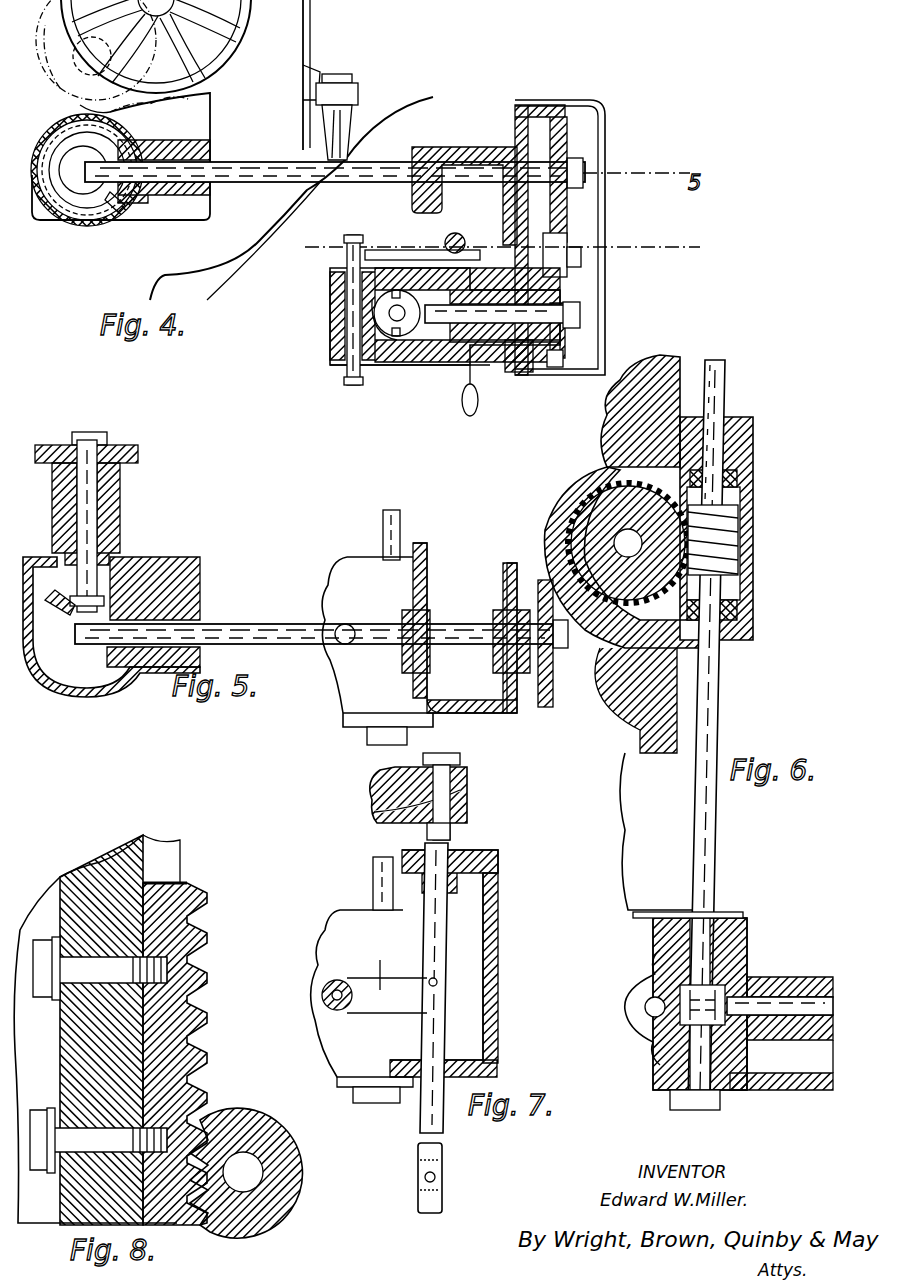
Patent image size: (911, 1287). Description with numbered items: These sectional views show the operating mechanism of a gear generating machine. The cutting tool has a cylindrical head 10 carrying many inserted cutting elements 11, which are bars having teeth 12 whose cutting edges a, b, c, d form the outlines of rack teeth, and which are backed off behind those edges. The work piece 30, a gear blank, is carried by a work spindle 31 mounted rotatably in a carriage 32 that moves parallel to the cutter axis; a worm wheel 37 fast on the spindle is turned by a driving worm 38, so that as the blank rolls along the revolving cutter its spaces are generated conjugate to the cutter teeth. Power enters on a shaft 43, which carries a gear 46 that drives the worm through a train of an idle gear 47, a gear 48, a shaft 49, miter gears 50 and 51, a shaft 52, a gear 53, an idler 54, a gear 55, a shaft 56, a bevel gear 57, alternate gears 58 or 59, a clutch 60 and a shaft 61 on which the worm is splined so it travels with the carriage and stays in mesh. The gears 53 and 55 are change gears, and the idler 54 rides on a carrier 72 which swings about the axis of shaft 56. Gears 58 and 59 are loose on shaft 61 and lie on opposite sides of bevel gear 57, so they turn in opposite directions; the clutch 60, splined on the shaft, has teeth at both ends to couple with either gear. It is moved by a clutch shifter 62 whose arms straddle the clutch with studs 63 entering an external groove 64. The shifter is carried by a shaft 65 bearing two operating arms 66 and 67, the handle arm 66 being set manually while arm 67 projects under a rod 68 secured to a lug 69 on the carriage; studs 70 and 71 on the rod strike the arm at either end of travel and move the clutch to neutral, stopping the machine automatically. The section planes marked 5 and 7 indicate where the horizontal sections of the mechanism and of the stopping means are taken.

In FIG. 4, the section line 5— 5 is at (455, 643).
In FIG. 4, the section line 7— 7 is at (496, 249).
In FIG. 8, the cylindrical head 10 is at (60, 1023).
In FIG. 4, the cutting elements 11 is at (322, 72).
In FIG. 8, the cutting elements 11 is at (160, 1033).
In FIG. 8, the teeth 12 is at (205, 950).
In FIG. 4, the work piece 30 is at (358, 97).
In FIG. 8, the work piece 30 is at (258, 1210).
In FIG. 4, the work spindle 31 is at (348, 140).
In FIG. 6, the carriage 32 is at (668, 437).
In FIG. 6, the worm wheel 37 is at (600, 525).
In FIG. 6, the driving worm 38 is at (740, 540).
In FIG. 4, the shaft 43 is at (170, 12).
In FIG. 4, the gear 46 is at (140, 22).
In FIG. 4, the idle gear 47 is at (150, 110).
In FIG. 4, the gear 48 is at (62, 100).
In FIG. 5, the gear 48 is at (128, 455).
In FIG. 5, the shaft 49 is at (95, 515).
In FIG. 4, the miter gear 50 is at (455, 643).
In FIG. 5, the miter gear 50 is at (122, 575).
In FIG. 4, the miter gear 51 is at (118, 210).
In FIG. 5, the miter gear 51 is at (125, 600).
In FIG. 4, the shaft 52 is at (258, 182).
In FIG. 5, the shaft 52 is at (258, 640).
In FIG. 4, the gear 53 is at (560, 140).
In FIG. 5, the gear 53 is at (548, 707).
In FIG. 4, the idler 54 is at (560, 270).
In FIG. 4, the gear 55 is at (556, 367).
In FIG. 4, the shaft 56 is at (515, 325).
In FIG. 4, the bevel gear 57 is at (432, 345).
In FIG. 6, the bevel gear 57 is at (745, 975).
In FIG. 4, the gear 58 is at (390, 250).
In FIG. 6, the gear 58 is at (720, 958).
In FIG. 6, the gear 59 is at (725, 1035).
In FIG. 6, the clutch 60 is at (680, 1020).
In FIG. 4, the shaft 61 is at (395, 315).
In FIG. 5, the shaft 61 is at (398, 530).
In FIG. 6, the shaft 61 is at (705, 850).
In FIG. 7, the shaft 61 is at (380, 875).
In FIG. 4, the clutch shifter 62 is at (385, 345).
In FIG. 4, the studs 63 is at (400, 340).
In FIG. 6, the external groove 64 is at (680, 1000).
In FIG. 4, the shaft 65 is at (350, 280).
In FIG. 6, the shaft 65 is at (648, 1008).
In FIG. 7, the shaft 65 is at (333, 998).
In FIG. 4, the operating arm 66 is at (462, 380).
In FIG. 4, the operating arm 67 is at (440, 252).
In FIG. 7, the operating arm 67 is at (362, 1006).
In FIG. 4, the rod 68 is at (466, 243).
In FIG. 7, the rod 68 is at (440, 935).
In FIG. 7, the lug 69 is at (462, 782).
In FIG. 7, the stud 70 is at (438, 980).
In FIG. 7, the stud 71 is at (437, 1178).
In FIG. 4, the carrier 72 is at (525, 372).
In FIG. 8, the cutting edge a is at (207, 910).
In FIG. 8, the cutting edge b is at (200, 898).
In FIG. 8, the cutting edge c is at (195, 890).
In FIG. 8, the cutting edge d is at (187, 883).